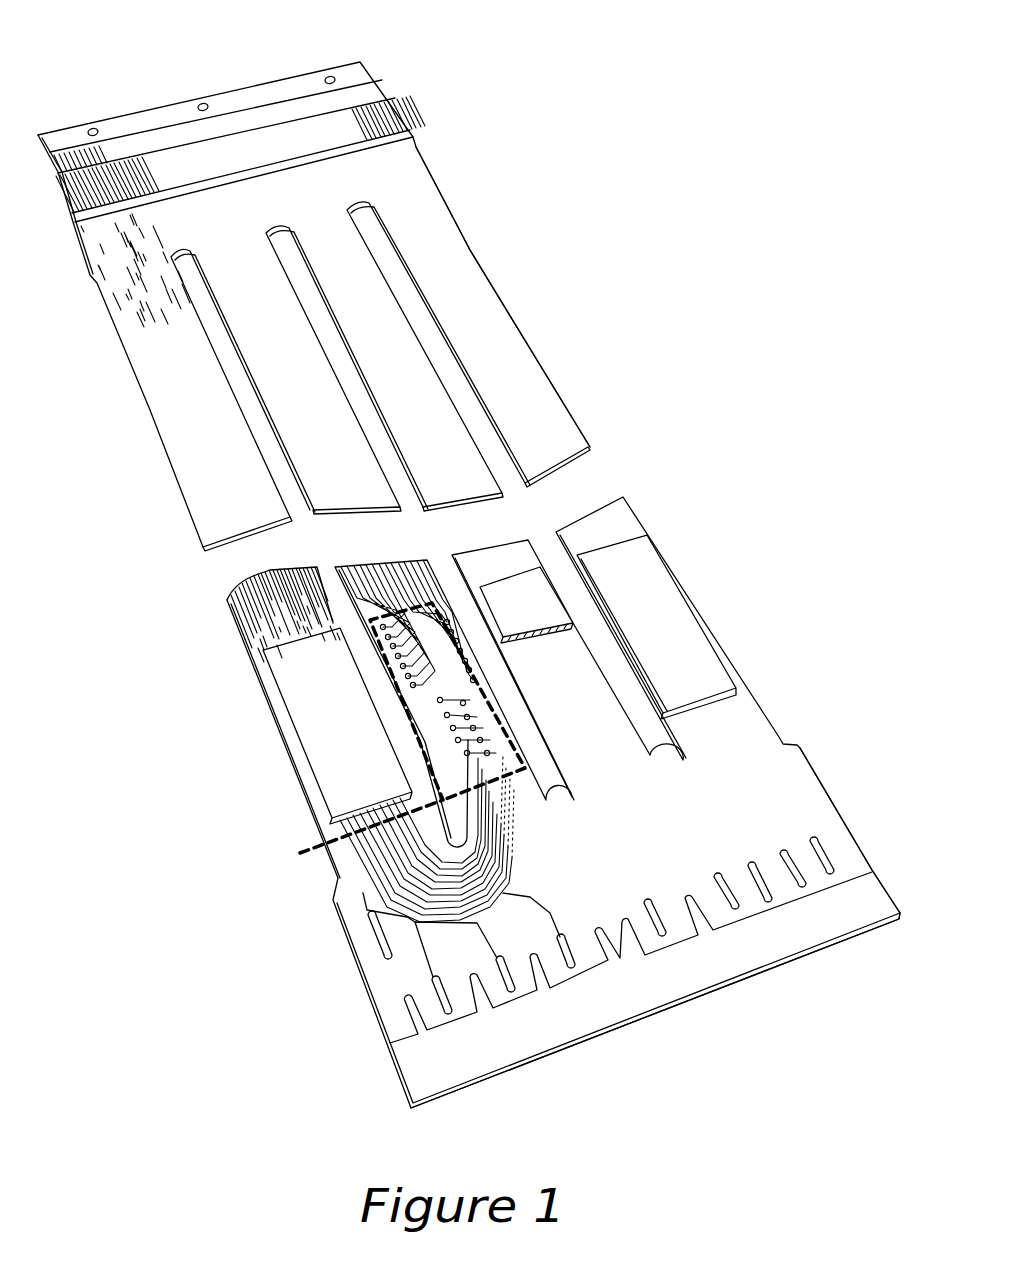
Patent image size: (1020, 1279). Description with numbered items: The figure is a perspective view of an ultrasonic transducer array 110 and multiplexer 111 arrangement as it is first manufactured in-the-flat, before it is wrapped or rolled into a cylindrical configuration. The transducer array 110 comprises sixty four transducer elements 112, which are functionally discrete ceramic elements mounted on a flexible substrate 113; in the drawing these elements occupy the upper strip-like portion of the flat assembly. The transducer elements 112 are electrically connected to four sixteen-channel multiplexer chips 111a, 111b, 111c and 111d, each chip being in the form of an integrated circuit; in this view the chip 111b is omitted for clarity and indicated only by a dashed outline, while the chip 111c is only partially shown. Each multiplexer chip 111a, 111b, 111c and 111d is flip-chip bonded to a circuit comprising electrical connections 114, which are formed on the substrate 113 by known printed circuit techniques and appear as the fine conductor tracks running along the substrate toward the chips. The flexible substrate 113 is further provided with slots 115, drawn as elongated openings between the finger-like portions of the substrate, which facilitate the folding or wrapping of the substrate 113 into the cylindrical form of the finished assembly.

The transducer array 110 is at (407, 107).
The multiplexer 111 is at (700, 600).
The multiplexer chip 111a is at (335, 706).
The multiplexer chip 111b is at (386, 741).
The multiplexer chip 111c is at (524, 603).
The multiplexer chip 111d is at (675, 662).
The transducer elements 112 is at (281, 148).
The flexible substrate 113 is at (413, 159).
The electrical connections 114 is at (274, 612).
The slots 115 is at (260, 433).